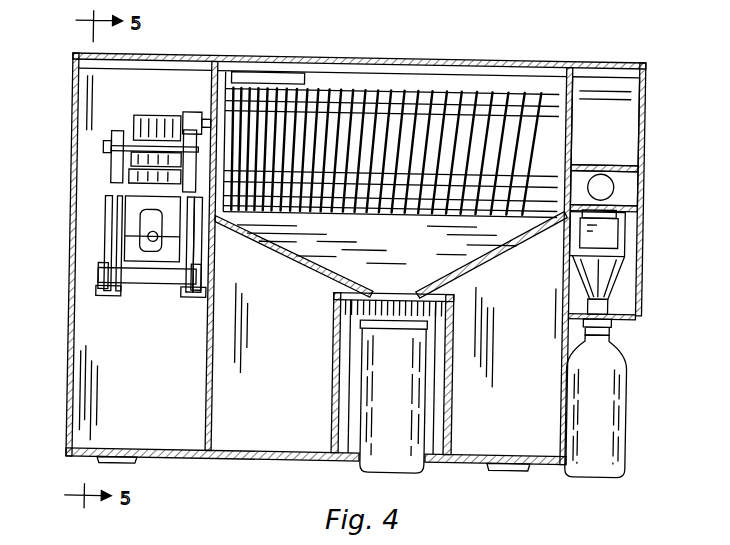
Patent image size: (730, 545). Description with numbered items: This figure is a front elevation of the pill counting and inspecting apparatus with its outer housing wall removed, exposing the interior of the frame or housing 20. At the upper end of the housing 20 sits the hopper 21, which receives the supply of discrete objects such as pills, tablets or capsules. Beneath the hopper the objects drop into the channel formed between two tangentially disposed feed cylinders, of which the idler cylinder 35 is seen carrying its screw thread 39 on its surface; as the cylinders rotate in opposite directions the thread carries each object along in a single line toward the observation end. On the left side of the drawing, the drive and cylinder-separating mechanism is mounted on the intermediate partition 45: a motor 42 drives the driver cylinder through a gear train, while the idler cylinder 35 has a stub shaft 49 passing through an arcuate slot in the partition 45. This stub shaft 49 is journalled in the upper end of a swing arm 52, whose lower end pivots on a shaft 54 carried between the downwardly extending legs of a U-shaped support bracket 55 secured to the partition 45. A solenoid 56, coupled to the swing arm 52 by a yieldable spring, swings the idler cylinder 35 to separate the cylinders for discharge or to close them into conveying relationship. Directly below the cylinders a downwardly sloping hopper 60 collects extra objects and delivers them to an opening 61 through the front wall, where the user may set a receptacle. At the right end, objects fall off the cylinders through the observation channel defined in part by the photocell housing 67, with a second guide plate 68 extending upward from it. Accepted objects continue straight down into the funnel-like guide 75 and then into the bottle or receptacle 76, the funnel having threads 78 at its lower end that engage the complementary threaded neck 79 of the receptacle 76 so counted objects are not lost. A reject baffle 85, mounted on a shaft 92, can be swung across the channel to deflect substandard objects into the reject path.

The housing 20 is at (189, 453).
The hopper 21 is at (264, 75).
The idler feed cylinder 35 is at (393, 119).
The screw thread 39 is at (381, 95).
The motor 42 is at (141, 117).
The intermediate partition 45 is at (213, 361).
The stub shaft 49 is at (197, 113).
The swing arm 52 is at (137, 171).
The shaft 54 is at (161, 279).
The support bracket 55 is at (131, 221).
The solenoid 56 is at (153, 237).
The downwardly sloping hopper 60 is at (504, 245).
The opening 61 is at (398, 286).
The photocell housing 67 is at (632, 177).
The second guide plate 68 is at (619, 108).
The funnel-like guide 75 is at (609, 276).
The receptacle 76 is at (609, 396).
The threads 78 is at (604, 299).
The threaded neck 79 is at (617, 314).
The reject baffle 85 is at (613, 226).
The shaft 92 is at (623, 206).